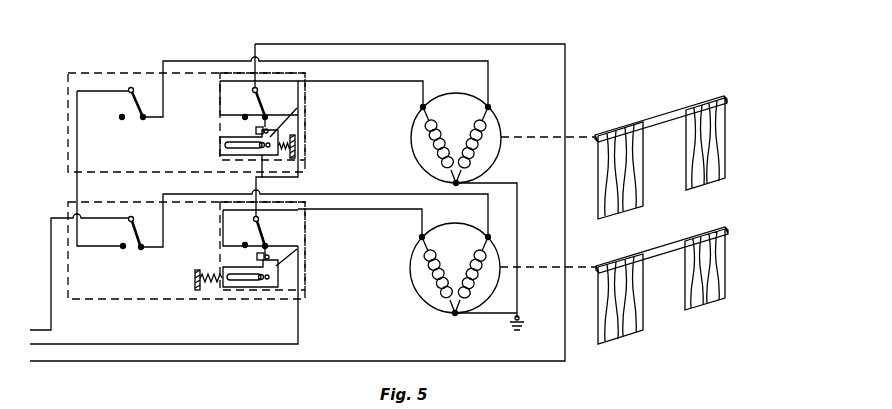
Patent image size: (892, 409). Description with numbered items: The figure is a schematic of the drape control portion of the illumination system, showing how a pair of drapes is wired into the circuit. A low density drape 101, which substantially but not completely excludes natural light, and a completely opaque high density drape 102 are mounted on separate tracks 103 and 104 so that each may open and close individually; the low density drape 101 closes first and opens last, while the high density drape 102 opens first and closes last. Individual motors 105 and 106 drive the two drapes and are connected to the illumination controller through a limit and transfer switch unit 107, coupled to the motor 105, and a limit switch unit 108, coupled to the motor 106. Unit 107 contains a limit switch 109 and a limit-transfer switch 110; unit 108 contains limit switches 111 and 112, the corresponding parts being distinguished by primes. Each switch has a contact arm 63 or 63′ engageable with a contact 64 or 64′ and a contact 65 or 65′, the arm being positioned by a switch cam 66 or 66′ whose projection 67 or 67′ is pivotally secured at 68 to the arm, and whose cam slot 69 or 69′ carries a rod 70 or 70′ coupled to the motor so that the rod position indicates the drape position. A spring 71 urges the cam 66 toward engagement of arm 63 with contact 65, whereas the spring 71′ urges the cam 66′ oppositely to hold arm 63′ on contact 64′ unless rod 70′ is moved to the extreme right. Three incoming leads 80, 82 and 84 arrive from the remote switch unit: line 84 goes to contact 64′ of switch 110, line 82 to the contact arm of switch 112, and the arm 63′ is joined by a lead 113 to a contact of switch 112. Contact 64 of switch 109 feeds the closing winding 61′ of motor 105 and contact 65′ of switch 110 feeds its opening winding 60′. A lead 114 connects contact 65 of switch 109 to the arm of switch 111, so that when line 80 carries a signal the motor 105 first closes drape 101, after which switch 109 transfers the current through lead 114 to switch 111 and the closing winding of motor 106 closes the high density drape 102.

The limit switch unit 108 is at (111, 73).
The limit and transfer switch unit 107 is at (173, 300).
The limit switch 112 is at (218, 125).
The limit-transfer switch 110 is at (233, 252).
The limit switch 111 is at (121, 105).
The limit switch 109 is at (130, 259).
The contact arm 63 is at (133, 230).
The contact arm 63′ is at (262, 231).
The closed blind contact 64 is at (140, 287).
The contact 64′ is at (267, 246).
The open blind contact 65 is at (121, 248).
The contact 65′ is at (244, 243).
The switch cam 66 is at (248, 288).
The cam 66′ is at (220, 143).
The projection 67 is at (292, 253).
The projection 67′ is at (288, 118).
The pivot 68 is at (256, 258).
The cam slot 69 is at (259, 280).
The cam slot 69′ is at (247, 147).
The rod 70 is at (268, 278).
The rod 70′ is at (258, 148).
The spring 71 is at (212, 284).
The spring 71′ is at (296, 150).
The lead 113 is at (297, 131).
The lead 114 is at (78, 191).
The line 80 is at (53, 318).
The line 82 is at (330, 361).
The incoming line 84 is at (183, 345).
The motor 105 is at (436, 272).
The motor 106 is at (431, 139).
The opening winding 60′ is at (432, 268).
The closing winding 61′ is at (468, 258).
The low density drape 101 is at (720, 285).
The high density drape 102 is at (722, 153).
The track 103 is at (667, 243).
The track 104 is at (677, 112).